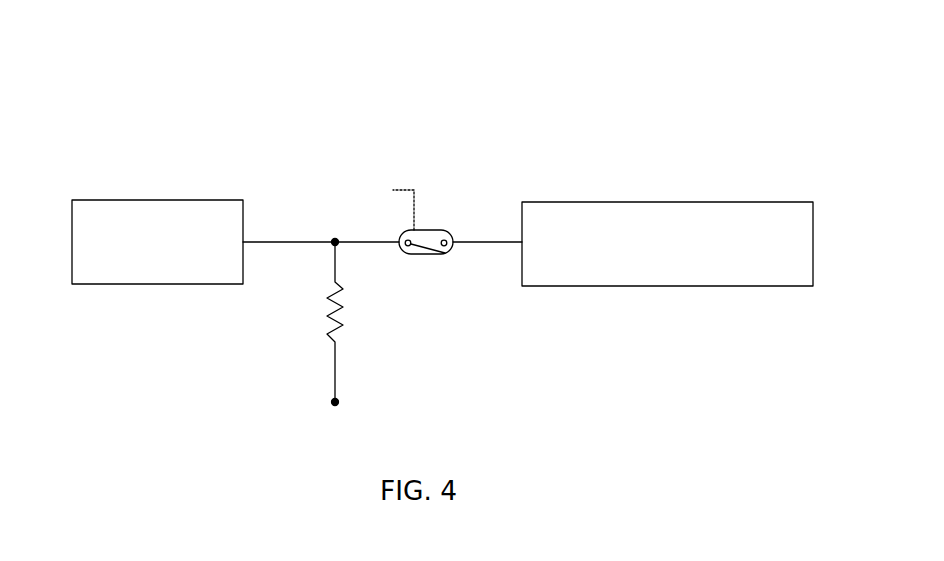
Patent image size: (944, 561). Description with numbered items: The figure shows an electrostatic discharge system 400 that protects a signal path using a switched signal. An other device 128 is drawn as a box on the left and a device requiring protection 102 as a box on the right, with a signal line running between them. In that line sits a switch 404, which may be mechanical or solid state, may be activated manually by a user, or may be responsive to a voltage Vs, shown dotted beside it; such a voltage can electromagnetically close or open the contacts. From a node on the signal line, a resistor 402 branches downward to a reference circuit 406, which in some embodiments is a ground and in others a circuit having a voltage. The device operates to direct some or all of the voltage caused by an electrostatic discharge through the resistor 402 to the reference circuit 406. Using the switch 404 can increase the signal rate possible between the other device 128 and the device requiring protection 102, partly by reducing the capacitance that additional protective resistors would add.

The electrostatic discharge system 400 is at (533, 68).
The other device 128 is at (200, 200).
The switch 404 is at (430, 230).
The device requiring protection 102 is at (582, 202).
The resistor 402 is at (328, 303).
The reference circuit 406 is at (336, 400).